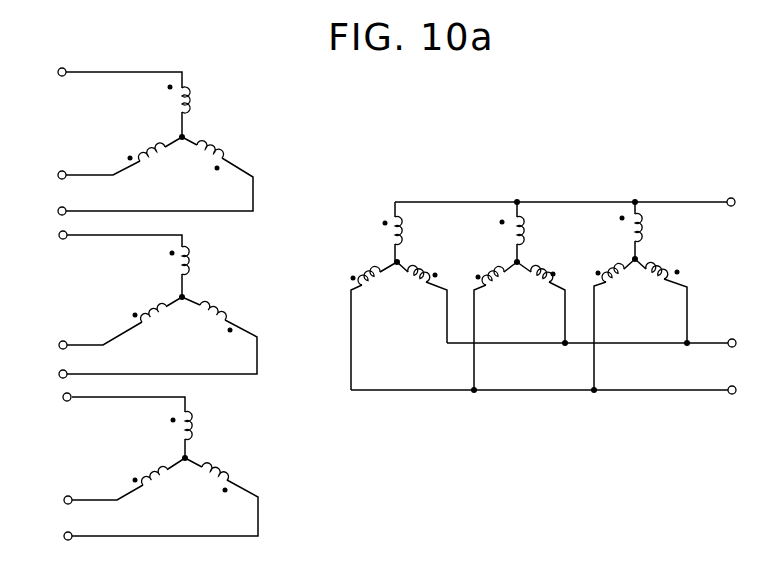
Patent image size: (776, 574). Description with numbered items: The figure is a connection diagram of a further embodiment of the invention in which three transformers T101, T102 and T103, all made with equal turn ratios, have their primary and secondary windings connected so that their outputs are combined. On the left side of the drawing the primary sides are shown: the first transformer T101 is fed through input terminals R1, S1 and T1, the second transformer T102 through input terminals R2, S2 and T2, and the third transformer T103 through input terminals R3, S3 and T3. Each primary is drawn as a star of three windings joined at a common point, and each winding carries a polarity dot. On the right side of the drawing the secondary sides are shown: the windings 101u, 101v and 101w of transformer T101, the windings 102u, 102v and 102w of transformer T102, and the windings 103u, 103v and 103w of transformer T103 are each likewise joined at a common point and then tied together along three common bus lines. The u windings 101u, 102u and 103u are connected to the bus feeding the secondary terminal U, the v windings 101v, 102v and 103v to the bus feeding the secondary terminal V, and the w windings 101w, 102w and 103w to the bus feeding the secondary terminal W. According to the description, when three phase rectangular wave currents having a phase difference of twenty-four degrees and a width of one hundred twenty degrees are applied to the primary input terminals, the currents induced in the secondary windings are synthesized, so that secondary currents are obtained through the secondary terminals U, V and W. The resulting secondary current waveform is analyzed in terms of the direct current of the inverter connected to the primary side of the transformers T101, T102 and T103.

The transformer T101 is at (254, 153).
The transformer T102 is at (476, 300).
The transformer T103 is at (605, 310).
The secondary winding of transformer T101 101u is at (187, 98).
The secondary winding of transformer T101 101v is at (203, 150).
The secondary winding of transformer T101 101w is at (152, 150).
The secondary winding of transformer T102 102u is at (188, 268).
The secondary winding of transformer T102 102v is at (205, 322).
The secondary winding of transformer T102 102w is at (153, 313).
The secondary winding of transformer T103 103u is at (193, 430).
The secondary winding of transformer T103 103v is at (200, 473).
The secondary winding of transformer T103 103w is at (157, 472).
The input terminal R1 is at (46, 74).
The input terminal S1 is at (46, 213).
The input terminal T1 is at (46, 177).
The input terminal R2 is at (47, 237).
The input terminal S2 is at (48, 376).
The input terminal T2 is at (47, 347).
The input terminal R3 is at (50, 399).
The input terminal S3 is at (52, 538).
The input terminal T3 is at (51, 502).
The secondary terminal U is at (576, 203).
The secondary terminal V is at (604, 344).
The secondary terminal W is at (559, 391).